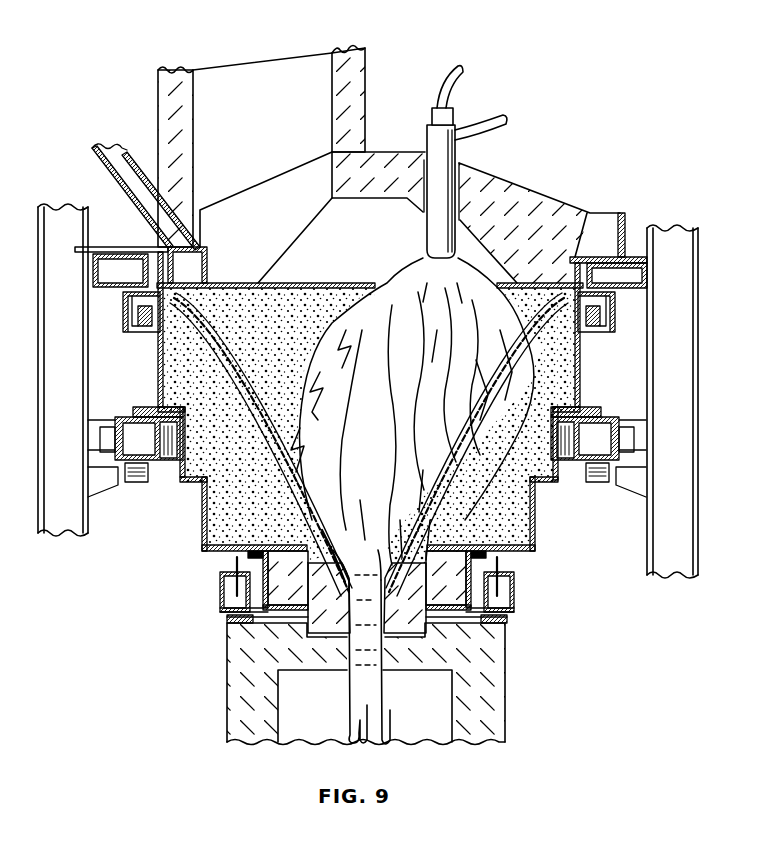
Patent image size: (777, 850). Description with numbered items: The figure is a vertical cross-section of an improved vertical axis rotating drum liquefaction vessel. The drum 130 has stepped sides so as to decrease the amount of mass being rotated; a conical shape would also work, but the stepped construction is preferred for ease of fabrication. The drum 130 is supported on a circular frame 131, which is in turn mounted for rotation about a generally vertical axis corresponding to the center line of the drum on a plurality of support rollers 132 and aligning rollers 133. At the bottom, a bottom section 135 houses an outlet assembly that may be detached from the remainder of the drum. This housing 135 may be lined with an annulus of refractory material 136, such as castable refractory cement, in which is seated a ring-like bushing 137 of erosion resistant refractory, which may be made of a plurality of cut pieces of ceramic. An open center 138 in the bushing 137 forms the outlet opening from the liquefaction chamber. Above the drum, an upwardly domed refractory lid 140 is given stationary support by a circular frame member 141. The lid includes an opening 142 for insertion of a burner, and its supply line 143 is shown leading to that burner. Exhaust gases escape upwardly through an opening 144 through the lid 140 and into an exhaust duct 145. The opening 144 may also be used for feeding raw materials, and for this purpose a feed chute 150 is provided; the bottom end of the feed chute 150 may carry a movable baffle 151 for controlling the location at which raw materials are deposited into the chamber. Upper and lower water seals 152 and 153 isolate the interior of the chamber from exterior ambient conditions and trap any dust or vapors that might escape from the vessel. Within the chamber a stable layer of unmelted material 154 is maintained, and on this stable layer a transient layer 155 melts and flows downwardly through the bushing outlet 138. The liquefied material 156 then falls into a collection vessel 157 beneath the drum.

The drum 130 is at (533, 527).
The circular frame 131 is at (565, 465).
The support rollers 132 is at (130, 483).
The aligning rollers 133 is at (96, 418).
The bottom section 135 is at (450, 612).
The annulus of refractory material 136 is at (386, 652).
The ring-like bushing 137 is at (316, 526).
The open center 138 is at (352, 538).
The refractory lid 140 is at (522, 186).
The circular frame member 141 is at (627, 257).
The opening 142 is at (427, 165).
The torch supply line 143 is at (457, 152).
The opening 144 is at (274, 222).
The exhaust duct 145 is at (366, 78).
The feed chute 150 is at (106, 168).
The movable baffle 151 is at (163, 252).
The upper water seal 152 is at (125, 320).
The lower water seal 153 is at (220, 589).
The stable layer of unmelted material 154 is at (197, 345).
The transient layer 155 is at (222, 372).
The liquefied material 156 is at (347, 704).
The collection vessel 157 is at (227, 677).